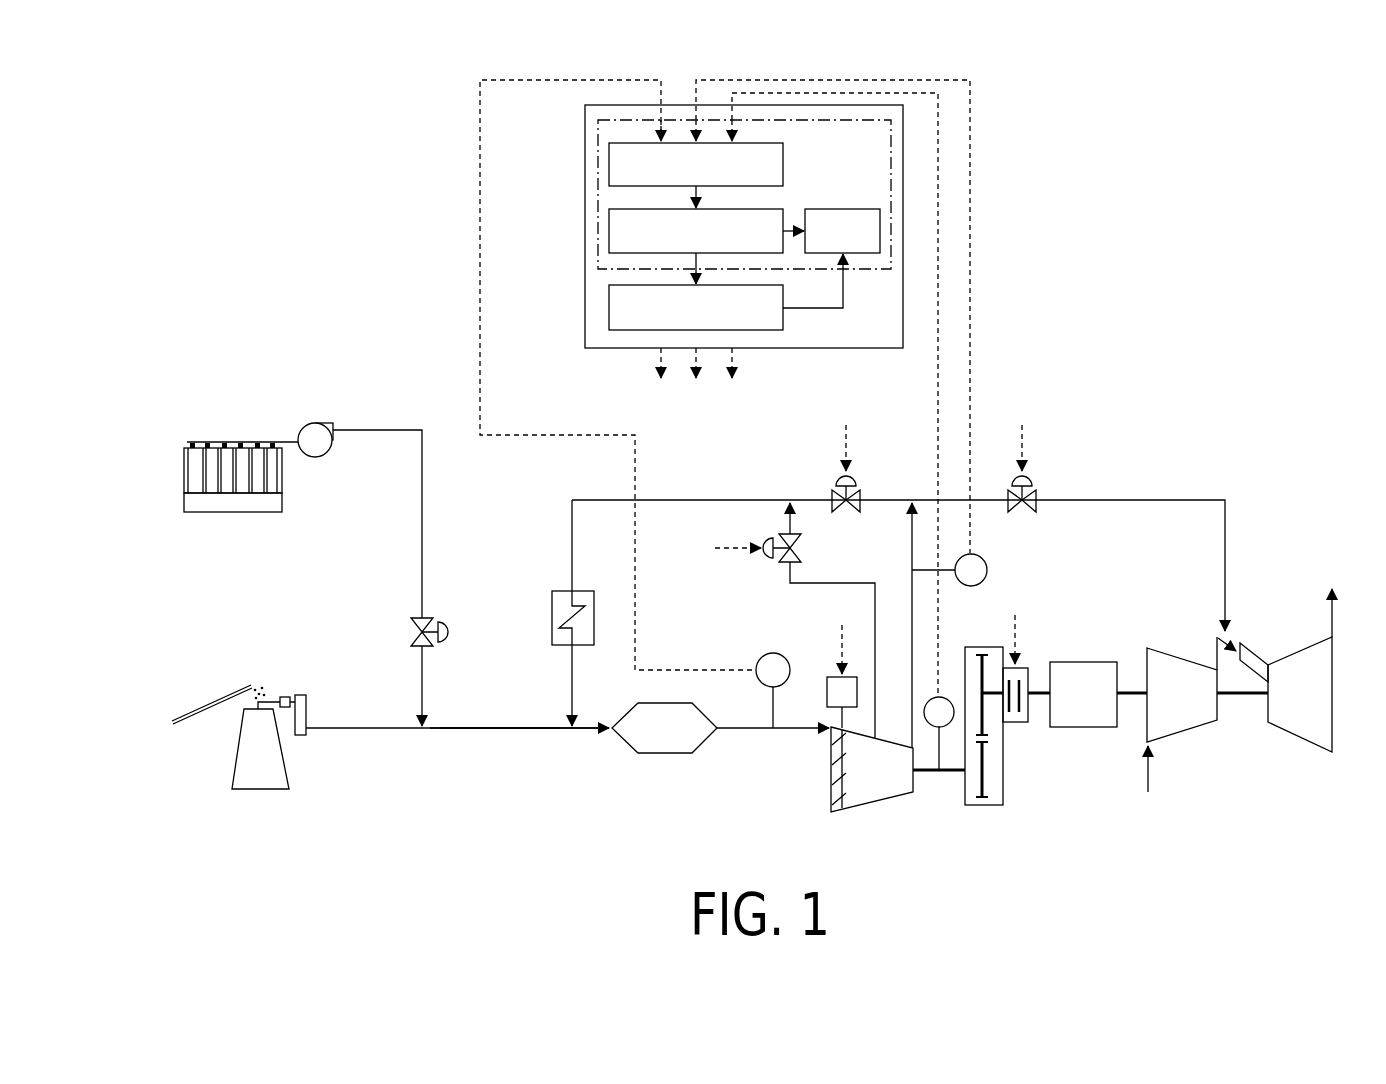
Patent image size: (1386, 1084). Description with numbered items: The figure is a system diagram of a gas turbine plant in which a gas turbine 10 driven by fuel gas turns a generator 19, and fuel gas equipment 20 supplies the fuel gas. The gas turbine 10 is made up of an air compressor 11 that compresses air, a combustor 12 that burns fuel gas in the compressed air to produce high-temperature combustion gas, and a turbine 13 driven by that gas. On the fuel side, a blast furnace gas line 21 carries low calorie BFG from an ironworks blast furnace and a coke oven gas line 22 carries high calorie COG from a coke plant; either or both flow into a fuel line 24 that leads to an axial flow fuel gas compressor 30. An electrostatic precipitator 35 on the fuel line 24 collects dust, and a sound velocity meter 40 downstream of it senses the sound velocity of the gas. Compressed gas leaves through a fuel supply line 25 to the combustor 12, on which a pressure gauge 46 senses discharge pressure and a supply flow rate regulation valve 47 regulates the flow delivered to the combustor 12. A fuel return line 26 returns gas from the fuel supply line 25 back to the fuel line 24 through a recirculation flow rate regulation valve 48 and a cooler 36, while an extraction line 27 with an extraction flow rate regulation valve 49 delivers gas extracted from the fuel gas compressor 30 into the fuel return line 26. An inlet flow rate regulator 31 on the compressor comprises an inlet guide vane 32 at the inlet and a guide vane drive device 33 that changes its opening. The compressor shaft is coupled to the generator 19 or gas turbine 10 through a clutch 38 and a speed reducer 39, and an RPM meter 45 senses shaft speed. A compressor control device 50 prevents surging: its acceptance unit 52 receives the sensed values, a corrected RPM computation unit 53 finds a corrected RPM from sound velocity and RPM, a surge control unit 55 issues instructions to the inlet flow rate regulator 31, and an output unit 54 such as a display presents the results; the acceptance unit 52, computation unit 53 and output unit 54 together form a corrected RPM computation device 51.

The gas turbine 10 is at (1286, 566).
The air compressor 11 is at (1175, 650).
The combustor 12 is at (1257, 650).
The turbine 13 is at (1283, 730).
The generator 19 is at (1082, 662).
The fuel gas equipment 20 is at (512, 741).
The blast furnace gas (BFG) line 21 is at (358, 730).
The coke oven gas (COG) line 22 is at (422, 524).
The fuel line 24 is at (493, 728).
The fuel supply line 25 is at (910, 541).
The fuel return line 26 is at (572, 528).
The extraction line 27 is at (786, 574).
The fuel gas compressor 30 is at (889, 804).
The inlet flow rate regulator 31 is at (774, 727).
The inlet guide vane 32 is at (838, 795).
The guide vane drive device 33 is at (827, 692).
The electrostatic precipitator 35 is at (647, 755).
The cooler 36 is at (552, 615).
The clutch 38 is at (1017, 723).
The speed reducer 39 is at (990, 806).
The sound velocity meter 40 is at (777, 655).
The RPM meter 45 is at (945, 697).
The pressure gauge 46 is at (988, 570).
The supply flow rate regulation valve 47 is at (1037, 492).
The recirculation flow rate regulation valve 48 is at (832, 492).
The extraction flow rate regulation valve 49 is at (785, 533).
The compressor control device 50 is at (878, 350).
The corrected RPM computation device 51 is at (596, 135).
The acceptance unit 52 is at (609, 162).
The corrected RPM computation unit 53 is at (609, 230).
The output unit 54 is at (849, 209).
The surge control unit 55 is at (609, 307).